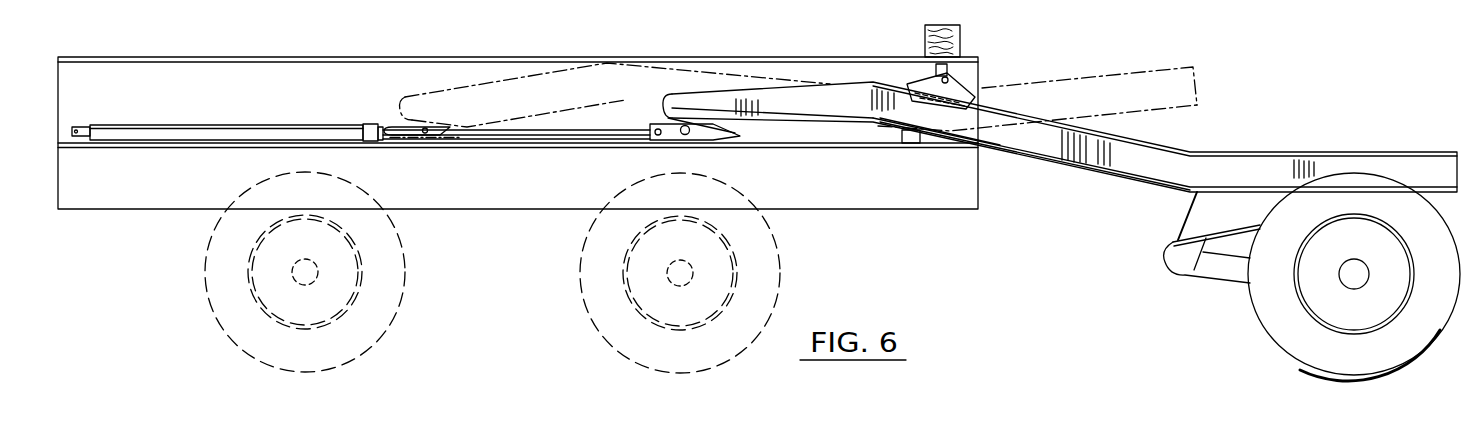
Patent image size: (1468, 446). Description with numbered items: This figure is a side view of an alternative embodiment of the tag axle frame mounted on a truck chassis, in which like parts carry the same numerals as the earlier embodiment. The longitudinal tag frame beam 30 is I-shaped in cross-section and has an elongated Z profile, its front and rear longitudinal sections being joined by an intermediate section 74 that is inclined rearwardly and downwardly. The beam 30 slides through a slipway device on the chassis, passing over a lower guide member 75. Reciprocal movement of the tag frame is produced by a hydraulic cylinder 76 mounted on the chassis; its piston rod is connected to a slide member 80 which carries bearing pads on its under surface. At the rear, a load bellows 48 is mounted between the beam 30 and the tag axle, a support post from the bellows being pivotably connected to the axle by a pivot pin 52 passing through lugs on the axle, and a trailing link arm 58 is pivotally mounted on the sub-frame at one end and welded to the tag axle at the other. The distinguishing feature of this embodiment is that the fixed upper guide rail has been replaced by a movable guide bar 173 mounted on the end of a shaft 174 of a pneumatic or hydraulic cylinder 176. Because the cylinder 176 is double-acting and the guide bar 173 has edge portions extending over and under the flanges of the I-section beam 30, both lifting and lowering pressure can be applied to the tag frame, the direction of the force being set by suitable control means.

The tag frame beam 30 is at (823, 100).
The load bellows 48 is at (1262, 312).
The pivot pin 52 is at (1192, 220).
The trailing link arm 58 is at (1209, 268).
The intermediate section 74 is at (1008, 142).
The lower guide member 75 is at (912, 140).
The hydraulic cylinder 76 is at (263, 133).
The slide member 80 is at (410, 141).
The movable guide bar 173 is at (925, 88).
The shaft 174 is at (948, 72).
The cylinder 176 is at (960, 34).